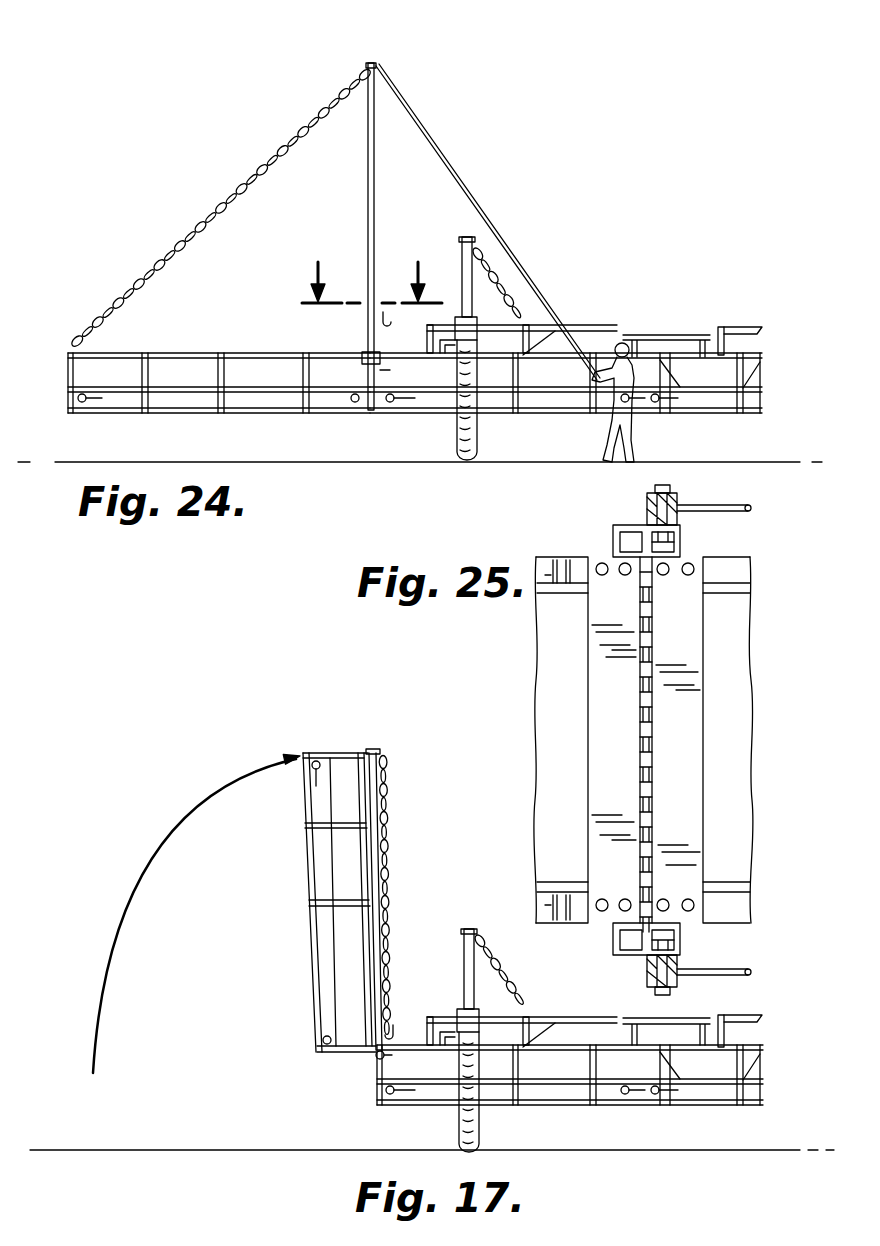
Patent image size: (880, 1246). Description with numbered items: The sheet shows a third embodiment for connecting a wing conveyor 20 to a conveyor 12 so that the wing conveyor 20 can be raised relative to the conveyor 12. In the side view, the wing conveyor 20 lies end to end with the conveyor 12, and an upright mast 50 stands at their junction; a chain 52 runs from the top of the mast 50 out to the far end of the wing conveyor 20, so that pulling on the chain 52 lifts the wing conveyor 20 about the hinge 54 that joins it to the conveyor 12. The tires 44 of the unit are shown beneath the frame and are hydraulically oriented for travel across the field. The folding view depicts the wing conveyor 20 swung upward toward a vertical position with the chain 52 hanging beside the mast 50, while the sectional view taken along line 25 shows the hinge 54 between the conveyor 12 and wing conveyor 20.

In FIG. 24, the conveyor 12 is at (497, 413).
In FIG. 25, the conveyor 12 is at (728, 725).
In FIG. 17, the conveyor 12 is at (541, 1105).
In FIG. 24, the wing conveyor 20 is at (202, 413).
In FIG. 25, the wing conveyor 20 is at (562, 705).
In FIG. 17, the wing conveyor 20 is at (343, 753).
In FIG. 24, the section line 25 is at (372, 271).
In FIG. 24, the tires 44 is at (457, 437).
In FIG. 17, the tires 44 is at (459, 1120).
In FIG. 24, the mast 50 is at (370, 182).
In FIG. 17, the mast 50 is at (384, 898).
In FIG. 24, the chain 52 is at (258, 166).
In FIG. 17, the chain 52 is at (388, 832).
In FIG. 25, the hinge 54 is at (653, 627).